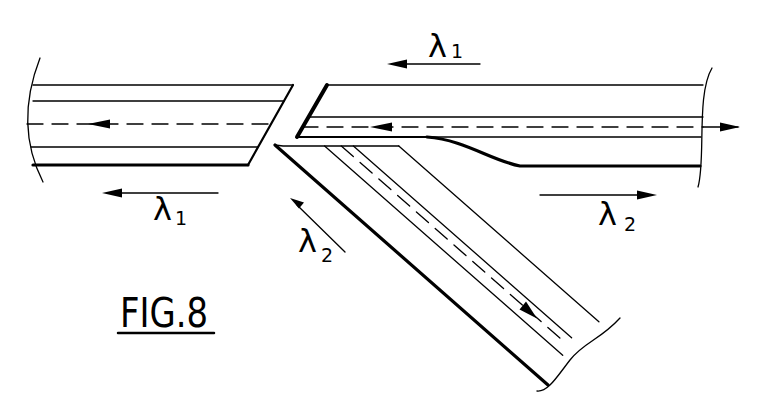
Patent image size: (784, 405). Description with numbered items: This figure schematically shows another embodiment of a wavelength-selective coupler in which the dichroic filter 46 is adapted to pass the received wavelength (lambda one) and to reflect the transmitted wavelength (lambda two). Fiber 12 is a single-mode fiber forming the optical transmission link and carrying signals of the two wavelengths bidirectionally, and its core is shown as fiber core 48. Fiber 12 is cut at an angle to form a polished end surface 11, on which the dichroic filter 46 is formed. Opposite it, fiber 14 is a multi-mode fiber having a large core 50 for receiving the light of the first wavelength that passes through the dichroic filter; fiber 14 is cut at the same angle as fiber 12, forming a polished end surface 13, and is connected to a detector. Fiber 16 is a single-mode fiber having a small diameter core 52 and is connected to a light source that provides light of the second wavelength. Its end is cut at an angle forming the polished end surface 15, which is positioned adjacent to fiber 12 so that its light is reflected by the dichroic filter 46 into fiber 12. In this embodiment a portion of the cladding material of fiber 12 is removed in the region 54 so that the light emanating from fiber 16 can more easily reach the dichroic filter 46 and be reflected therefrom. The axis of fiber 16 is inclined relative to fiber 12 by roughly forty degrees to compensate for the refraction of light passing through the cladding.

The end surface 11 is at (311, 103).
The optical fiber 12 is at (567, 85).
The end surface 13 is at (296, 88).
The optical fiber 14 is at (186, 85).
The end surface 15 is at (288, 148).
The optical fiber 16 is at (526, 258).
The dichroic filter 46 is at (326, 85).
The fiber core 48 is at (676, 117).
The large core 50 is at (107, 102).
The small diameter core 52 is at (563, 328).
The region 54 is at (411, 141).